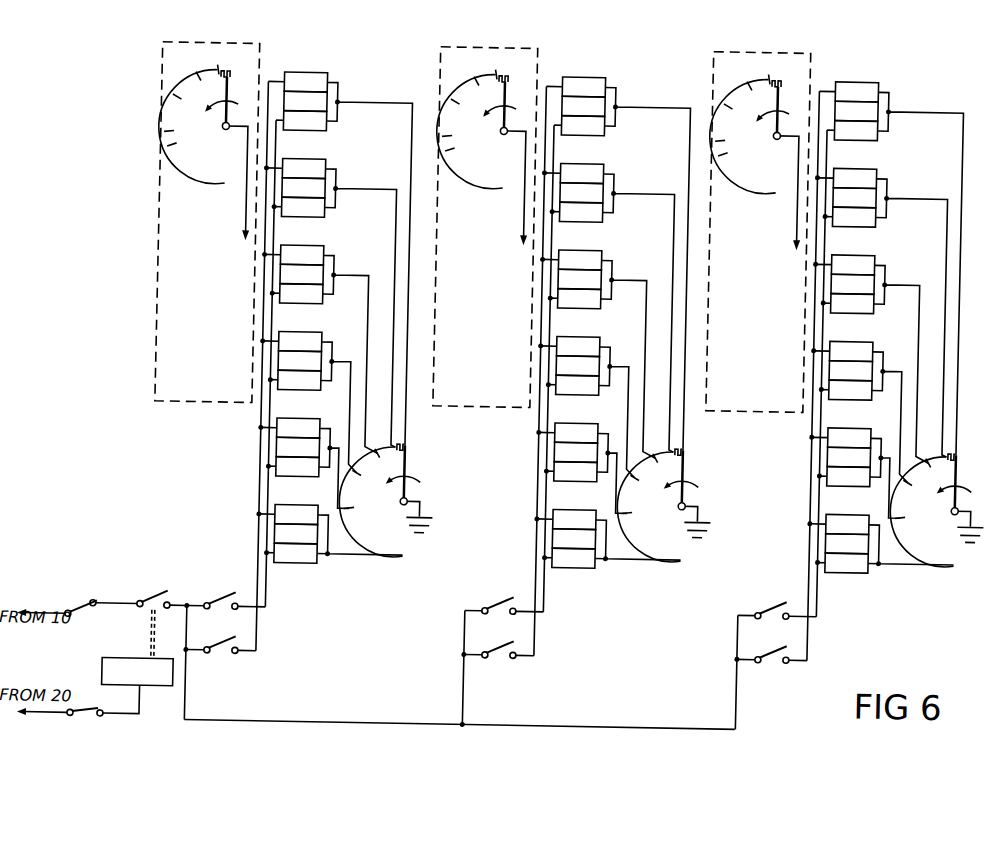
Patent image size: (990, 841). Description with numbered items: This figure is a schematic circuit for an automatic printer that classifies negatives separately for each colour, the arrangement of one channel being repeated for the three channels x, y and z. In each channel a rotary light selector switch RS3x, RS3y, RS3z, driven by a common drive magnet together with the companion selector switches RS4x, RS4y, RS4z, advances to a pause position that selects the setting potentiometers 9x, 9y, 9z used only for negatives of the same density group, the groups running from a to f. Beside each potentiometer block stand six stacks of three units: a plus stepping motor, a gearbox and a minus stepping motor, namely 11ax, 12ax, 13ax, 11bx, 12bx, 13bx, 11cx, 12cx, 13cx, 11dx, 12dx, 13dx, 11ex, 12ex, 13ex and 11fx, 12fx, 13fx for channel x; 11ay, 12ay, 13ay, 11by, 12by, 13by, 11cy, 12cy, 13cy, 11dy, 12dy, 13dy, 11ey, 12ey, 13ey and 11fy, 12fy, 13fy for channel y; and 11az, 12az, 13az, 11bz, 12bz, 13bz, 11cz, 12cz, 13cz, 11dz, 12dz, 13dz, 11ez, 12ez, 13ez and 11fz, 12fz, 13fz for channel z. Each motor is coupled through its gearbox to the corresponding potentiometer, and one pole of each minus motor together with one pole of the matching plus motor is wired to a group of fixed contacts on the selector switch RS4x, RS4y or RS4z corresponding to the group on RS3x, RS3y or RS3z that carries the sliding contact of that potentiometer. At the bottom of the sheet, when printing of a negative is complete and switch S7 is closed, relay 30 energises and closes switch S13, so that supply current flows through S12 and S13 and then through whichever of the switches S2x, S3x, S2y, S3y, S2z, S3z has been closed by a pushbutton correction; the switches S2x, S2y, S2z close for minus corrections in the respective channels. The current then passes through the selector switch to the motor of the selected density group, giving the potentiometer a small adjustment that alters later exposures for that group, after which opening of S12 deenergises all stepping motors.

The potentiometer 9x is at (172, 409).
The potentiometer 9y is at (485, 243).
The potentiometer 9z is at (758, 248).
The light selector switch RS3x is at (204, 160).
The light selector switch RS3y is at (482, 165).
The light selector switch RS3z is at (755, 170).
The light selector switch RS4x is at (388, 498).
The light selector switch RS4y is at (666, 503).
The light selector switch RS4z is at (939, 508).
The relay 30 is at (121, 664).
The switch S12 is at (95, 602).
The switch S13 is at (157, 615).
The switch S7 is at (80, 710).
The switch S2x is at (226, 592).
The switch S3x is at (221, 638).
The switch S2y is at (504, 597).
The switch S3y is at (499, 643).
The switch S2z is at (777, 602).
The switch S3z is at (772, 648).
The stepping motor 11ax is at (305, 82).
The gearbox 12ax is at (305, 101).
The stepping motor 13ax is at (304, 121).
The stepping motor 11bx is at (303, 168).
The gearbox 12bx is at (303, 188).
The stepping motor 13bx is at (302, 207).
The stepping motor 11cx is at (301, 255).
The gearbox 12cx is at (301, 274).
The stepping motor 13cx is at (301, 294).
The stepping motor 11dx is at (299, 341).
The gearbox 12dx is at (299, 361).
The stepping motor 13dx is at (299, 380).
The stepping motor 11ex is at (298, 428).
The gearbox 12ex is at (297, 447).
The stepping motor 13ex is at (297, 467).
The stepping motor 11fx is at (296, 514).
The gearbox 12fx is at (295, 534).
The stepping motor 13fx is at (295, 553).
The stepping motor 11ay is at (583, 87).
The gearbox 12ay is at (583, 106).
The stepping motor 13ay is at (582, 126).
The stepping motor 11by is at (581, 173).
The gearbox 12by is at (581, 193).
The stepping motor 13by is at (580, 212).
The stepping motor 11cy is at (579, 260).
The gearbox 12cy is at (579, 279).
The stepping motor 13cy is at (579, 299).
The stepping motor 11dy is at (577, 346).
The gearbox 12dy is at (577, 366).
The stepping motor 13dy is at (577, 385).
The stepping motor 11ey is at (576, 433).
The gearbox 12ey is at (575, 452).
The stepping motor 13ey is at (575, 472).
The stepping motor 11fy is at (574, 519).
The gearbox 12fy is at (573, 539).
The stepping motor 13fy is at (573, 558).
The stepping motor 11az is at (856, 92).
The gearbox 12az is at (856, 111).
The stepping motor 13az is at (855, 131).
The stepping motor 11bz is at (854, 178).
The gearbox 12bz is at (854, 198).
The stepping motor 13bz is at (853, 217).
The stepping motor 11cz is at (852, 265).
The gearbox 12cz is at (852, 284).
The stepping motor 13cz is at (852, 304).
The stepping motor 11dz is at (850, 351).
The gearbox 12dz is at (850, 371).
The stepping motor 13dz is at (850, 390).
The stepping motor 11ez is at (849, 438).
The gearbox 12ez is at (848, 457).
The stepping motor 13ez is at (848, 477).
The stepping motor 11fz is at (847, 524).
The gearbox 12fz is at (846, 544).
The stepping motor 13fz is at (846, 563).